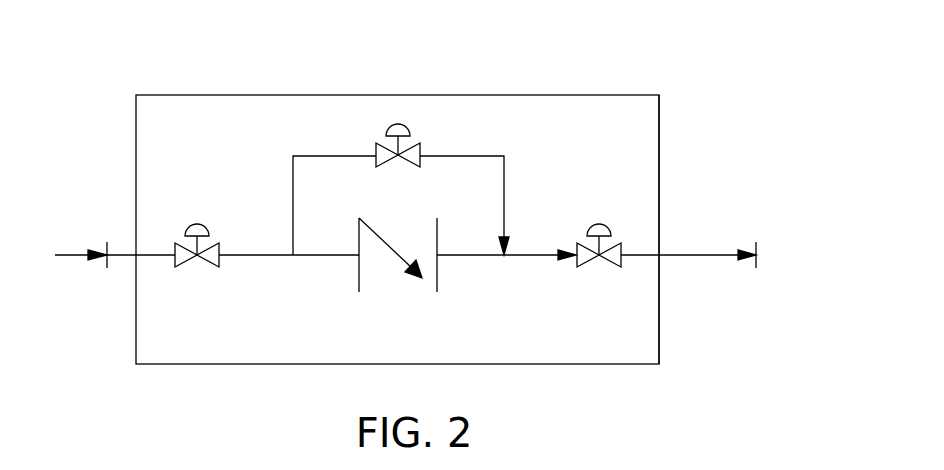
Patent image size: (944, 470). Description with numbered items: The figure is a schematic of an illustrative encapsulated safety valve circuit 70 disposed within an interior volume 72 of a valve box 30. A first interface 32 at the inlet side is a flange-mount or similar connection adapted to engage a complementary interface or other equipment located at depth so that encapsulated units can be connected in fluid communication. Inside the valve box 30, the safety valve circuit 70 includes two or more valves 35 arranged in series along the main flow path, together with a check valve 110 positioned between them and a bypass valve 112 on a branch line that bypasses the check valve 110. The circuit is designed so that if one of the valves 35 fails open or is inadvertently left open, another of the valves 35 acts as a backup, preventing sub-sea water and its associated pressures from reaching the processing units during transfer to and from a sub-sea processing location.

The valve box 30 is at (178, 95).
The interior volume 72 is at (638, 121).
The first interface 32 is at (107, 268).
The valve 35 is at (188, 262).
The encapsulated safety valve circuit 70 is at (258, 150).
The bypass valve 112 is at (395, 126).
The check valve 110 is at (385, 268).